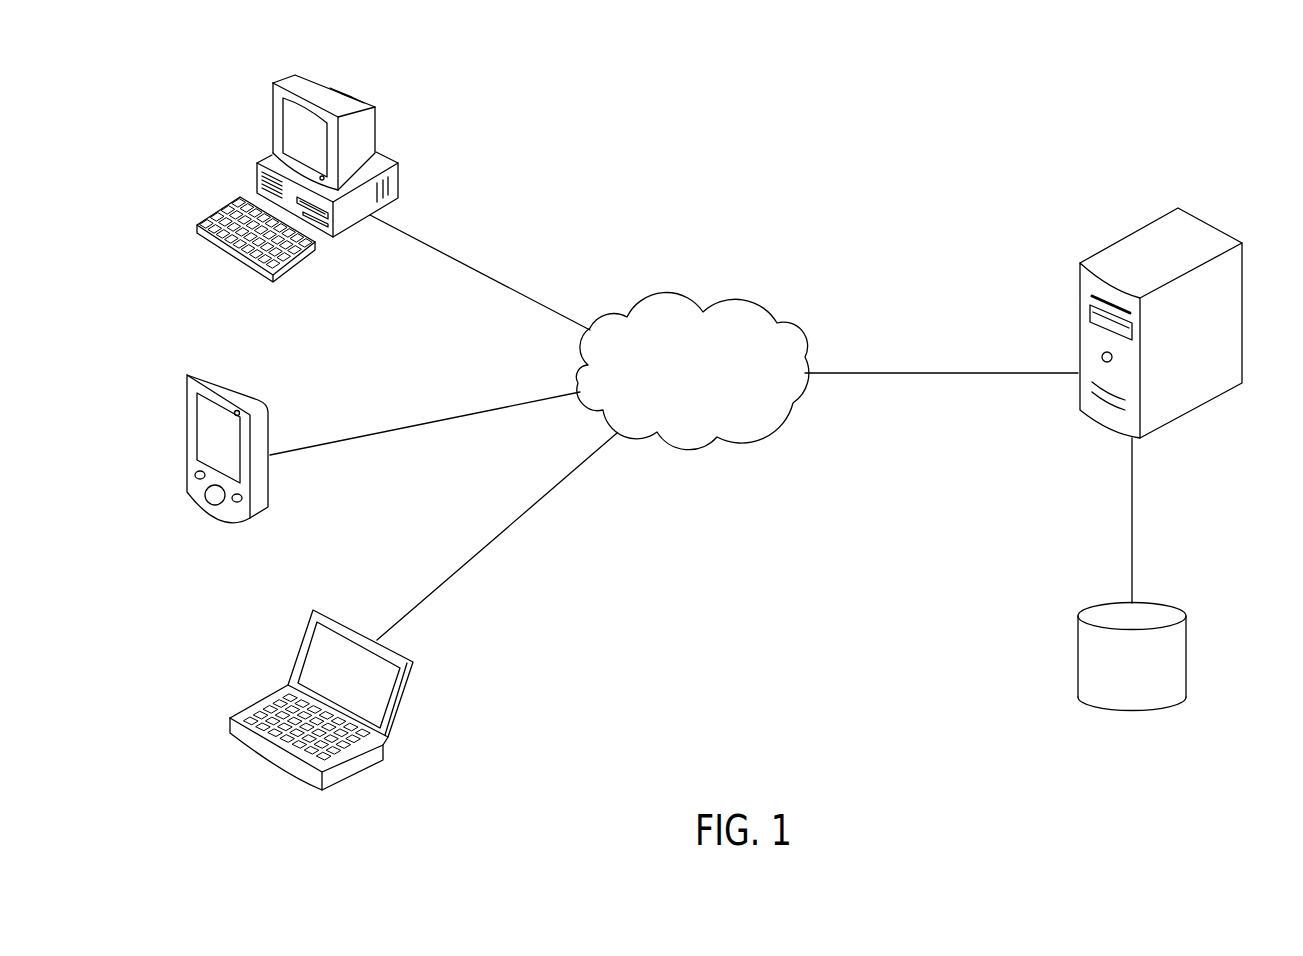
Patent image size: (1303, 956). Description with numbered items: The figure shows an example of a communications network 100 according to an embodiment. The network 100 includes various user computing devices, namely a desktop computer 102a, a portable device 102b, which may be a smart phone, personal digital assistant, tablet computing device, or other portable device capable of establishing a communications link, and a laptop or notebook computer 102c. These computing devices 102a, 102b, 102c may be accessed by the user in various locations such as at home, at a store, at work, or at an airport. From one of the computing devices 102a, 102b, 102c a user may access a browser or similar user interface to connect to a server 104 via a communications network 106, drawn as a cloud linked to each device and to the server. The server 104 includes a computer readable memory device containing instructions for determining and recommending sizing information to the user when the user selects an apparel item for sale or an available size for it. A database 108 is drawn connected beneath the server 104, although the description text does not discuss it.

The system 100 is at (1059, 92).
The desktop computer client device 102a is at (378, 123).
The handheld / mobile client device 102b is at (270, 430).
The laptop computer client device 102c is at (397, 652).
The server 104 is at (1242, 297).
The network 106 is at (745, 300).
The database 108 is at (1188, 660).